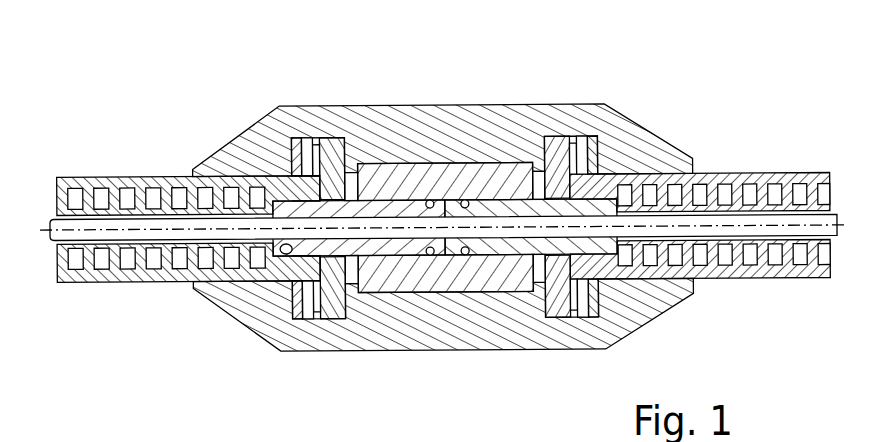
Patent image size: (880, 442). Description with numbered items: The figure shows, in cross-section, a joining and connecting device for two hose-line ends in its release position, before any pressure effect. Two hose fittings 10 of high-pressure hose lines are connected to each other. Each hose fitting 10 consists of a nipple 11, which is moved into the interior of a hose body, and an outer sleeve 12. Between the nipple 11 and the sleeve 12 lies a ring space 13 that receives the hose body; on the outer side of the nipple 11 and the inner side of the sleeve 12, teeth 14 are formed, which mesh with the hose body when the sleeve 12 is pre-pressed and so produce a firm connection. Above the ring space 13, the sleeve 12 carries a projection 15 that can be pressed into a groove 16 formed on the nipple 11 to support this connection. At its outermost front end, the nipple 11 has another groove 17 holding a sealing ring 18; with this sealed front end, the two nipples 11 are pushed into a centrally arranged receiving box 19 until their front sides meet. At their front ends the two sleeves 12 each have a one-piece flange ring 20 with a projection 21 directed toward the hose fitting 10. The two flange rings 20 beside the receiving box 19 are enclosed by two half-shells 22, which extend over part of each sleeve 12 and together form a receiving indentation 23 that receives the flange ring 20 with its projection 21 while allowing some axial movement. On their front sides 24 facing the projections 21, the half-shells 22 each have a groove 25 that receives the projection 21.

The hose fitting 10 is at (182, 163).
The nipple 11 is at (47, 243).
The sleeve 12 is at (115, 190).
The ring space 13 is at (142, 262).
The teeth 14 is at (186, 215).
The projection 15 is at (300, 262).
The groove 16 is at (288, 253).
The groove 17 is at (426, 256).
The sealing ring 18 is at (440, 256).
The receiving box 19 is at (478, 178).
The flange ring 20 is at (338, 160).
The projection 21 is at (314, 158).
The half-shell 22 is at (427, 120).
The receiving indentation 23 is at (304, 162).
The front side 24 is at (290, 178).
The groove 25 is at (297, 160).